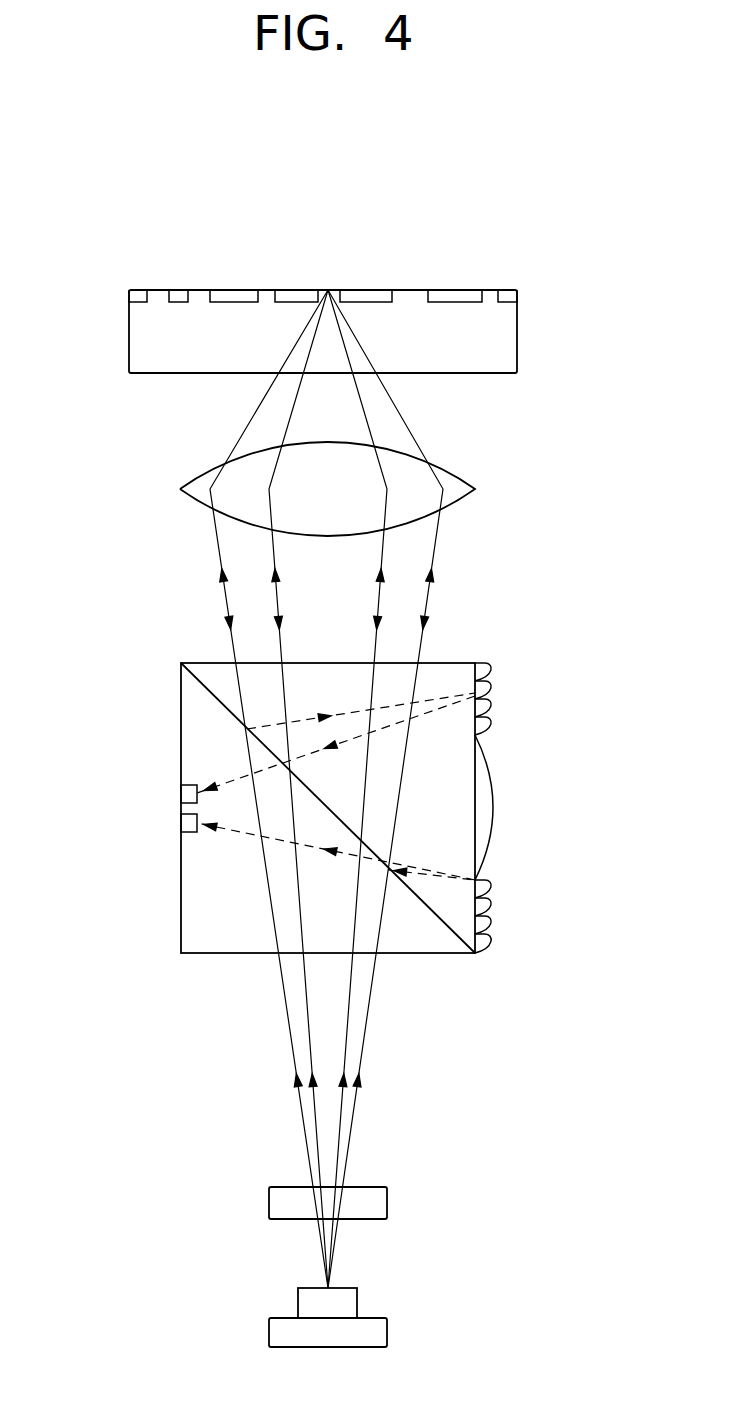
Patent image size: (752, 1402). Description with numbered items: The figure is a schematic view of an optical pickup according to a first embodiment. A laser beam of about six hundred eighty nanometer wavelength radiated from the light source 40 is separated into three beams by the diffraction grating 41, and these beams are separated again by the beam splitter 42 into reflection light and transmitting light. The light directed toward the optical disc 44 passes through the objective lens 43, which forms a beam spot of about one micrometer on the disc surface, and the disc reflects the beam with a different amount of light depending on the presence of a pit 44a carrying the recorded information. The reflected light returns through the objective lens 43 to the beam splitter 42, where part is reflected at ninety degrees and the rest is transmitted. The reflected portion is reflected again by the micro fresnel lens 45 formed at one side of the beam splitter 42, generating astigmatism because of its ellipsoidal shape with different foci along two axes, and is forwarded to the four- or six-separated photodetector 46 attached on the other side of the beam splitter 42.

The light source 40 is at (269, 1332).
The diffraction grating 41 is at (269, 1202).
The beam splitter 42 is at (185, 905).
The objective lens 43 is at (180, 489).
The optical disc 44 is at (510, 339).
The pit 44a is at (490, 295).
The micro fresnel lens 45 is at (493, 805).
The photodetector 46 is at (181, 791).